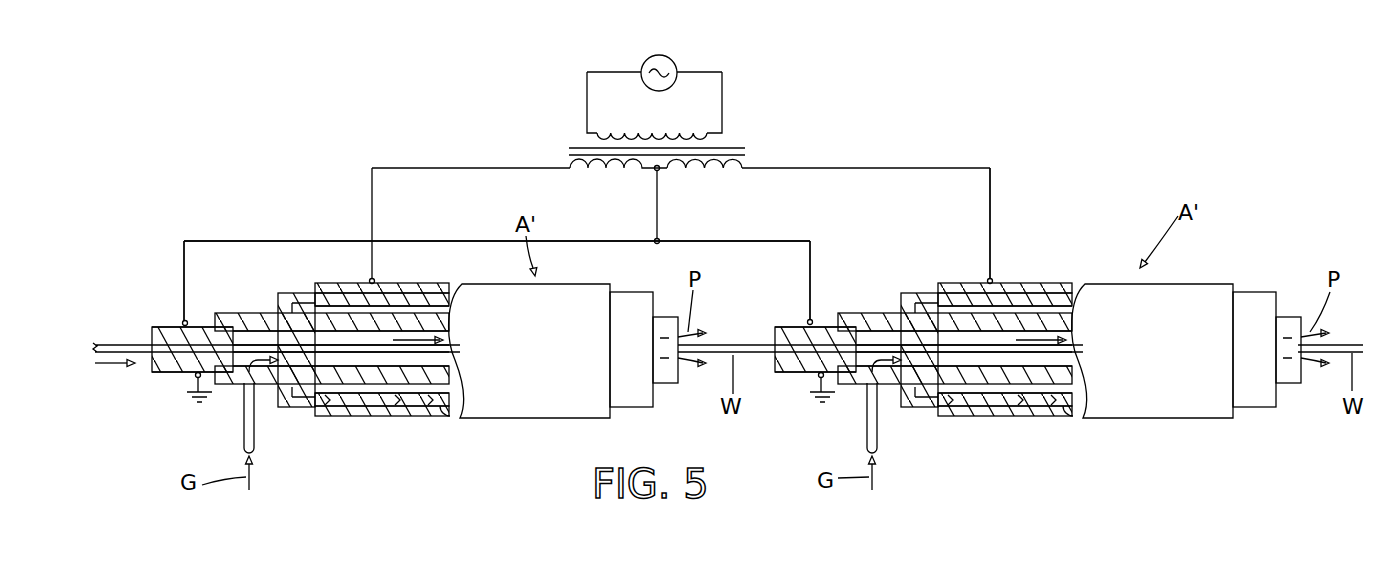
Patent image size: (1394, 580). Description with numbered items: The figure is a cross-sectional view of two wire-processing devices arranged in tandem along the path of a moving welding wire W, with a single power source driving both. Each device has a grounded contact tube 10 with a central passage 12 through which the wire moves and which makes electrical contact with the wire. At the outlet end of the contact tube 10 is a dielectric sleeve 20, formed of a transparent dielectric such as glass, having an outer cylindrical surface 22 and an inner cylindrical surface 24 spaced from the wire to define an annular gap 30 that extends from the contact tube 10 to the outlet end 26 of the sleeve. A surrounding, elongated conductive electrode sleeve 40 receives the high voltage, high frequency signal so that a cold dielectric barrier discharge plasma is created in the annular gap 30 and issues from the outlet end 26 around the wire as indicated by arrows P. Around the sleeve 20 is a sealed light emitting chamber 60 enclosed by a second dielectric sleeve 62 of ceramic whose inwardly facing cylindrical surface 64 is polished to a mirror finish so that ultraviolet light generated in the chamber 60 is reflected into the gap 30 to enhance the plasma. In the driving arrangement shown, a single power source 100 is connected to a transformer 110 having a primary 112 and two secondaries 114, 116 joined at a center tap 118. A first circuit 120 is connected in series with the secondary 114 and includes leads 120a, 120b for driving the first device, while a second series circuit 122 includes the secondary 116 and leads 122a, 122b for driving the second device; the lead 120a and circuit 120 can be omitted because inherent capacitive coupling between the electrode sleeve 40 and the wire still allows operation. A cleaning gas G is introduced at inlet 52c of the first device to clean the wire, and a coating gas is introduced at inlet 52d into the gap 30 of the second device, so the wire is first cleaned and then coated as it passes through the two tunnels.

The grounded contact tube 10 is at (158, 314).
The central passage 12 is at (185, 347).
The dielectric sleeve 20 is at (305, 300).
The outer cylindrical surface 22 is at (332, 313).
The inner cylindrical surface 24 is at (313, 363).
The outlet end 26 is at (681, 378).
The annular gap 30 is at (408, 360).
The conductive electrode sleeve 40 is at (425, 285).
The inlet 52c is at (243, 421).
The inlet 52d is at (867, 427).
The light emitting chamber 60 is at (422, 390).
The second dielectric sleeve 62 is at (443, 412).
The inwardly facing cylindrical surface 64 is at (355, 393).
The power source 100 is at (683, 58).
The transformer 110 is at (732, 135).
The primary 112 is at (658, 128).
The secondary 114 is at (612, 172).
The secondary 116 is at (700, 173).
The center tap 118 is at (662, 173).
The first circuit 120 is at (315, 230).
The lead 120a is at (186, 284).
The lead 120b is at (470, 167).
The second series circuit 122 is at (990, 157).
The lead 122a is at (812, 272).
The lead 122b is at (875, 167).